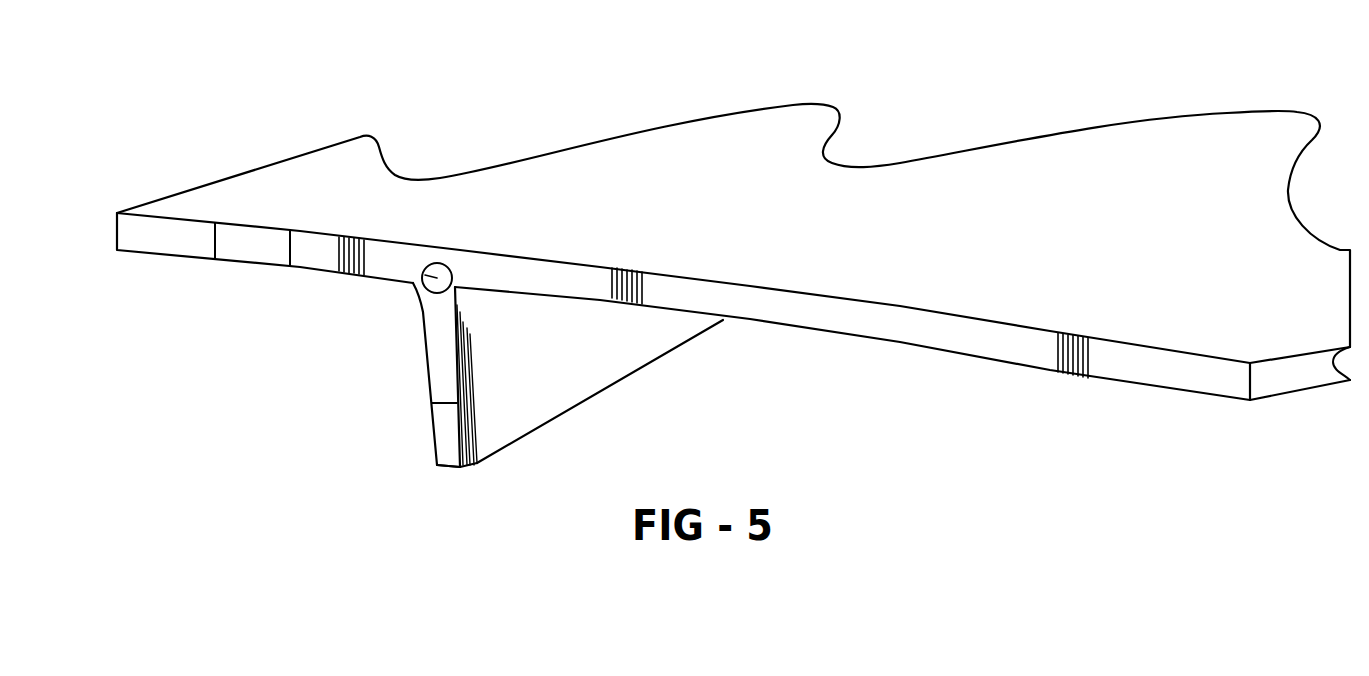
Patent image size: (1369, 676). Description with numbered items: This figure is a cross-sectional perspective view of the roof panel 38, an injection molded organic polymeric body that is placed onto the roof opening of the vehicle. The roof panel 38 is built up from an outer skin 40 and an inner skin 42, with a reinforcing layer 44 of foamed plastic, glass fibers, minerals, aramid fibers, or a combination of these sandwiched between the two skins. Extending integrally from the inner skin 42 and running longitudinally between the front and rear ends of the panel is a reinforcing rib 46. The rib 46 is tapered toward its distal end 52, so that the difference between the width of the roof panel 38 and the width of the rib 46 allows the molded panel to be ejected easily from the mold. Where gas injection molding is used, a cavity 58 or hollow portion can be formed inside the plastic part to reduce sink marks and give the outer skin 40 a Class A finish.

The roof panel 38 is at (612, 96).
The outer skin 40 is at (172, 218).
The inner skin 42 is at (248, 250).
The reinforcing layer 44 is at (443, 372).
The reinforcing rib 46 is at (643, 390).
The distal end 52 is at (450, 468).
The cavity 58 is at (422, 274).